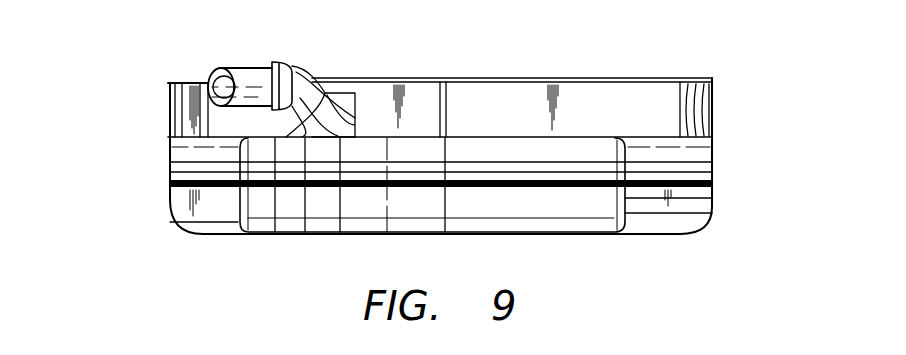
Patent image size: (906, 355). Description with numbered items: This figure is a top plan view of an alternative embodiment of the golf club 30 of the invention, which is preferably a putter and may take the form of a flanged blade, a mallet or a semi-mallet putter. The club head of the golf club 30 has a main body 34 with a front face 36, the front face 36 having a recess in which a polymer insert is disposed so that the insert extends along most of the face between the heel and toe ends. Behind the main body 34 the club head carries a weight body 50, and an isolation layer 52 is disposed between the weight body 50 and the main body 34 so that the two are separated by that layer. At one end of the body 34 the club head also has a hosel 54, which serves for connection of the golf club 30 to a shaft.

The golf club 30 is at (137, 125).
The body 34 is at (712, 147).
The front face 36 is at (595, 78).
The weight body 50 is at (705, 220).
The isolation layer 52 is at (712, 182).
The hosel 54 is at (299, 74).